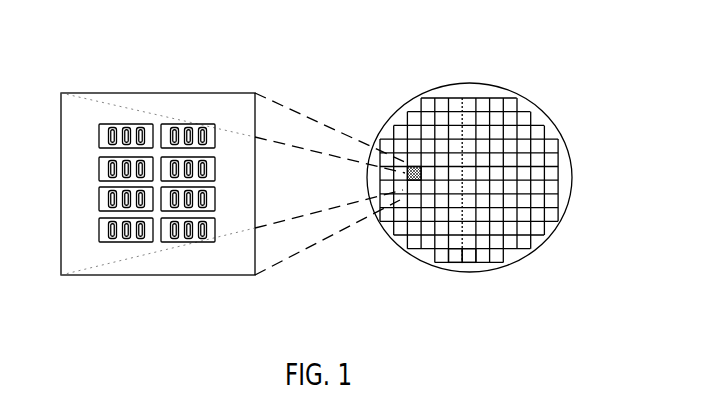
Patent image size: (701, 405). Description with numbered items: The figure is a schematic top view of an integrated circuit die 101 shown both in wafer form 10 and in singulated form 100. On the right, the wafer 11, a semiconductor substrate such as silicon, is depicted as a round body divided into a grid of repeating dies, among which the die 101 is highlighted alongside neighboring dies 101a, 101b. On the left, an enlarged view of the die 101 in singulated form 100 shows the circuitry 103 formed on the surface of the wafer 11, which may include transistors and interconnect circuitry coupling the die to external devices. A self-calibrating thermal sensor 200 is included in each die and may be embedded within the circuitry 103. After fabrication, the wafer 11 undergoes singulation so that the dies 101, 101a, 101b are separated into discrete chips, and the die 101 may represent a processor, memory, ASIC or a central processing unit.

The wafer form 10 is at (478, 142).
The wafer 11 is at (509, 89).
The singulated form 100 is at (146, 62).
The die 101 is at (406, 170).
The die 101a is at (454, 263).
The die 101b is at (468, 263).
The circuitry 103 is at (99, 163).
The self-calibrating thermal sensor 200 is at (99, 135).